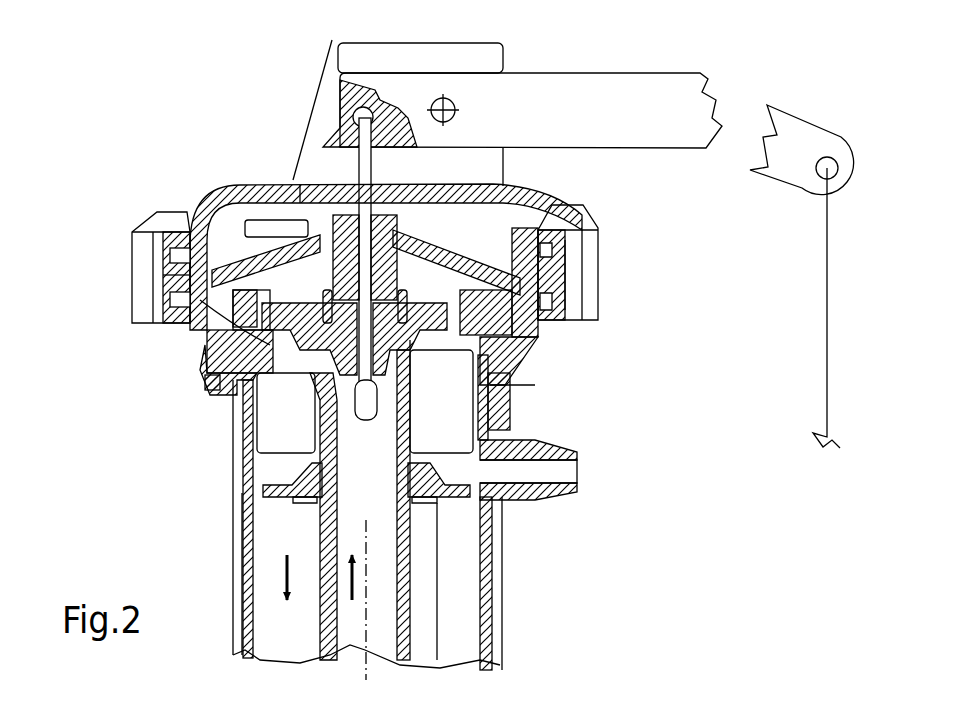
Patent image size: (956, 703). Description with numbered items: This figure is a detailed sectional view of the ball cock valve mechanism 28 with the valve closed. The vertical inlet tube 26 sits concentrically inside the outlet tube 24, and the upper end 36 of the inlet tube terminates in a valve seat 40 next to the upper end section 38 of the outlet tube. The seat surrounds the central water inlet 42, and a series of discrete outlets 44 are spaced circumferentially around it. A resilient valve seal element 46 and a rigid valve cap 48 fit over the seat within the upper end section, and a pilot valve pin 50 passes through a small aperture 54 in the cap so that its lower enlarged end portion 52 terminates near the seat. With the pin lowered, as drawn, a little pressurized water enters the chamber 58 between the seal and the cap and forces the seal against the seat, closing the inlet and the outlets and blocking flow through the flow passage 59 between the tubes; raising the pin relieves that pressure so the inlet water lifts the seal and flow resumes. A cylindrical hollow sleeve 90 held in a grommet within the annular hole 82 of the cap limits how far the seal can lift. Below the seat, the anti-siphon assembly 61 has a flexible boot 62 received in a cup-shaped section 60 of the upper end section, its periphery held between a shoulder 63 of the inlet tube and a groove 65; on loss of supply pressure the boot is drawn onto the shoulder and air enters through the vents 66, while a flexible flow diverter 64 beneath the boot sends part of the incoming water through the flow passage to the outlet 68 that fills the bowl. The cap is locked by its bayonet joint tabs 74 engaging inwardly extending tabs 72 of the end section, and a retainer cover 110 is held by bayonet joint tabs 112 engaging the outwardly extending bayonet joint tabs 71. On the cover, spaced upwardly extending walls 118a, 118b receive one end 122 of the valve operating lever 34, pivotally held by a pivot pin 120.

The outlet tube 24 is at (246, 597).
The vertical inlet tube 26 is at (485, 647).
The valve mechanism 28 is at (94, 382).
The valve operating lever 34 is at (533, 92).
The upper end of the inlet tube 36 is at (290, 385).
The upper end section of the outlet tube 38 is at (545, 295).
The valve seat 40 is at (415, 380).
The central water inlet 42 is at (400, 437).
The discrete outlets 44 is at (445, 363).
The resilient valve seal element 46 is at (205, 393).
The rigid valve cap 48 is at (226, 213).
The pilot valve pin 50 is at (308, 289).
The lower enlarged end portion of the pilot valve pin 52 is at (365, 420).
The small aperture in the valve cap 54 is at (320, 196).
The chamber 58 is at (532, 290).
The flow passage 59 is at (460, 575).
The cup-shaped section 60 is at (505, 404).
The anti-siphon assembly 61 is at (183, 457).
The flexible boot 62 is at (500, 430).
The shoulder 63 is at (512, 350).
The flexible flow diverter 64 is at (453, 500).
The groove 65 is at (500, 378).
The vents 66 is at (210, 426).
The outlet 68 is at (550, 470).
The bayonet joint tabs 71 is at (369, 244).
The inwardly extending tabs 72 is at (162, 286).
The bayonet joint tabs of the valve cap 74 is at (508, 267).
The annular hole 82 is at (388, 196).
The cylindrical hollow sleeve 90 is at (232, 345).
The retainer cover 110 is at (176, 262).
The bayonet joint tabs of the retainer cover 112 is at (170, 292).
The upwardly extending wall 118a is at (487, 158).
The upwardly extending wall 118b is at (406, 52).
The pivot pin 120 is at (354, 110).
The end of the valve operating lever 122 is at (357, 78).